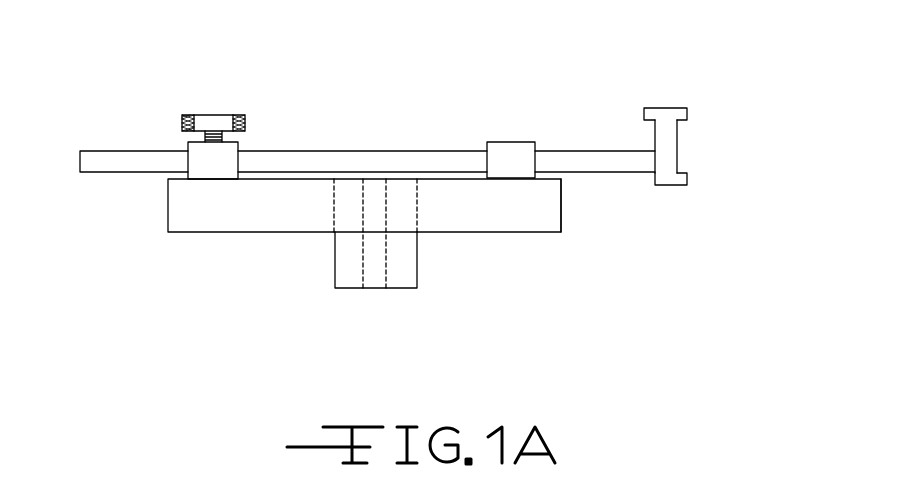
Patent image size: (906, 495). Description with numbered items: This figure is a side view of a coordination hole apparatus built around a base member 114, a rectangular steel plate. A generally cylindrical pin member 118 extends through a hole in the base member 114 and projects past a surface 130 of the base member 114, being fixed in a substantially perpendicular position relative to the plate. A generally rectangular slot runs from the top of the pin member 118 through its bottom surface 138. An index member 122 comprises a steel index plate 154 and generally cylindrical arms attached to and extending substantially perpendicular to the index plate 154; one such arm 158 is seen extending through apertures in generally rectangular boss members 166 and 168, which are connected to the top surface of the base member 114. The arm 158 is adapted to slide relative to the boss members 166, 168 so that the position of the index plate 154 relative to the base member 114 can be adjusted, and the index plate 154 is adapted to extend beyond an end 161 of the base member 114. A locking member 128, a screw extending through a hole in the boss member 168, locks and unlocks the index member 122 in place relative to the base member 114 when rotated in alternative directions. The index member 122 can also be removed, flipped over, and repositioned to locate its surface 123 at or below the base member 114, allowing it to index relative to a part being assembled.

The base member 114 is at (485, 232).
The pin member 118 is at (335, 248).
The index member 122 is at (682, 137).
The surface 123 is at (663, 108).
The locking member 128 is at (182, 121).
The surface 130 is at (428, 232).
The bottom surface 138 is at (348, 288).
The index plate 154 is at (682, 155).
The arm 158 is at (603, 172).
The end 161 is at (561, 210).
The boss member 166 is at (517, 142).
The boss member 168 is at (207, 163).